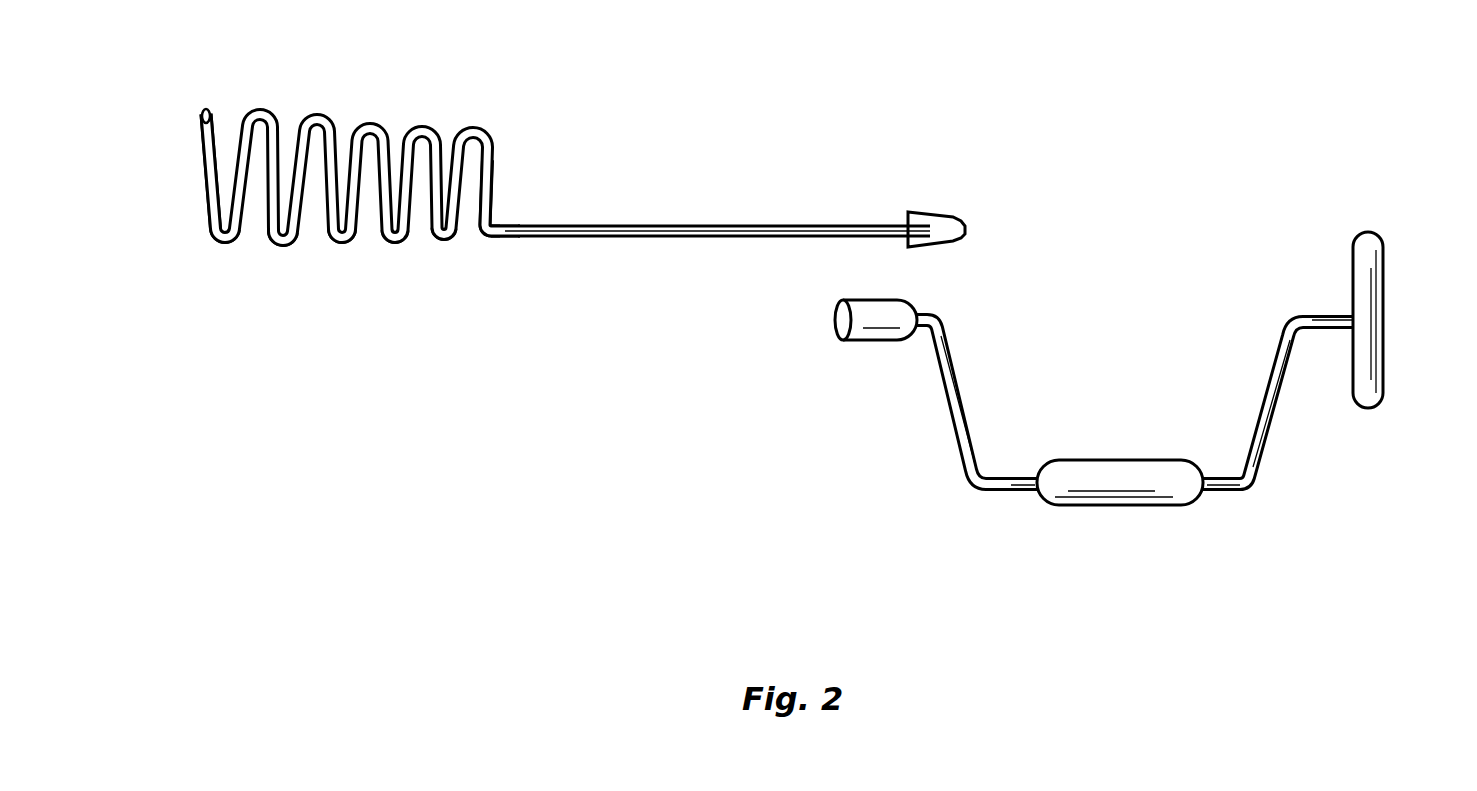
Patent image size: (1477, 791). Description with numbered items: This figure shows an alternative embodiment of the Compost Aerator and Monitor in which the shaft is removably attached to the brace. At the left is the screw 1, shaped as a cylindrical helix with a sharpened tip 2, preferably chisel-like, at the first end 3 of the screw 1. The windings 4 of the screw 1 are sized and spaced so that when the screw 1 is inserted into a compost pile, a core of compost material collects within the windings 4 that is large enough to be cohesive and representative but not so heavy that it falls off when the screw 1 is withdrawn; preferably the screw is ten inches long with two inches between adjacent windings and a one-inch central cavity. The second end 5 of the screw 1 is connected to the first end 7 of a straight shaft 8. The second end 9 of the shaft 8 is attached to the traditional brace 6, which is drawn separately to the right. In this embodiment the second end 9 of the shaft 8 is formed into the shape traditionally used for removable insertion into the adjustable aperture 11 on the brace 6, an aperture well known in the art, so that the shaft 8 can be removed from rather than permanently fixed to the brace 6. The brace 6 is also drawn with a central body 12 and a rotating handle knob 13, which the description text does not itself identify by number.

The screw 1 is at (381, 190).
The sharpened tip 2 is at (202, 114).
The first end of the screw 3 is at (215, 113).
The windings 4 is at (228, 246).
The second end of the screw 5 is at (492, 247).
The traditional brace 6 is at (1109, 438).
The first end of the shaft 7 is at (518, 223).
The straight shaft 8 is at (671, 229).
The second end of the shaft 9 is at (930, 225).
The adjustable aperture 11 is at (835, 318).
The central body 12 is at (1122, 475).
The handle knob 13 is at (1375, 310).